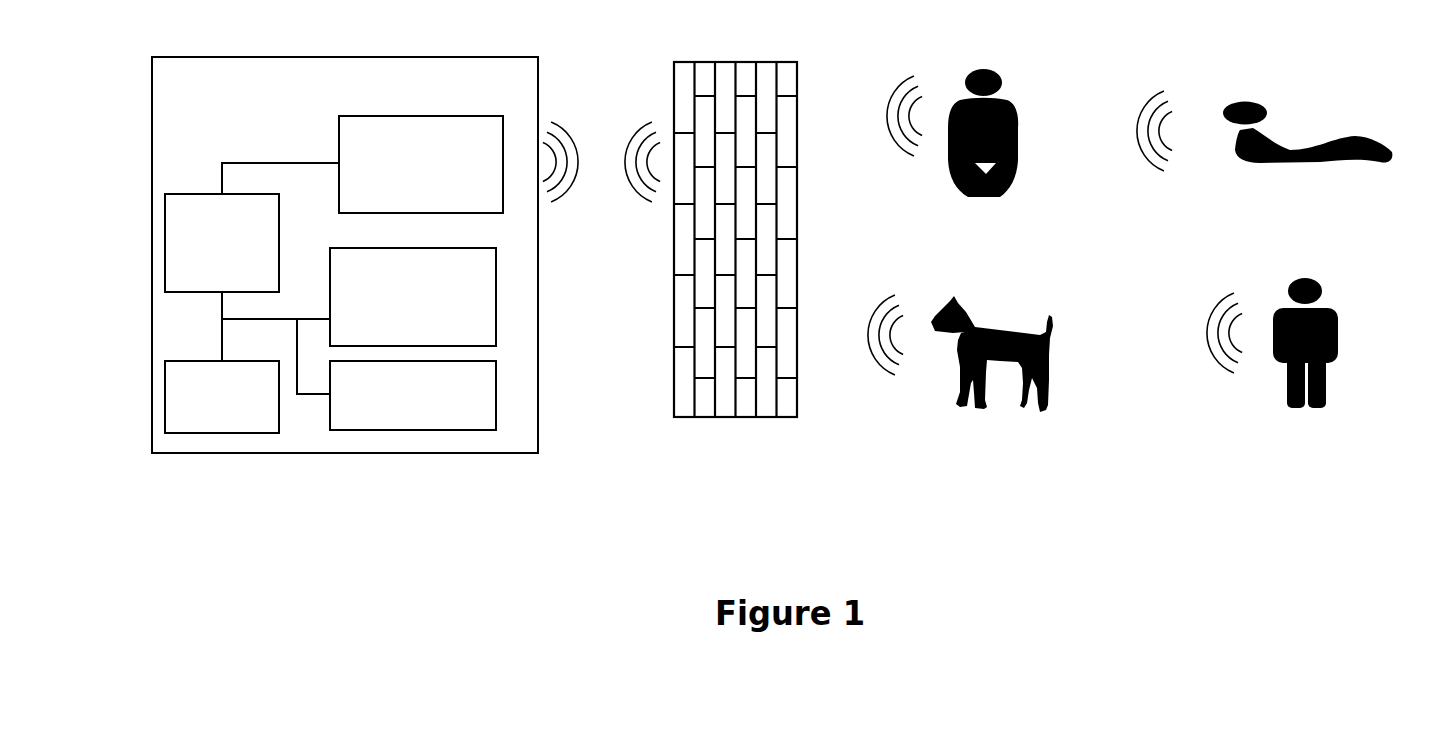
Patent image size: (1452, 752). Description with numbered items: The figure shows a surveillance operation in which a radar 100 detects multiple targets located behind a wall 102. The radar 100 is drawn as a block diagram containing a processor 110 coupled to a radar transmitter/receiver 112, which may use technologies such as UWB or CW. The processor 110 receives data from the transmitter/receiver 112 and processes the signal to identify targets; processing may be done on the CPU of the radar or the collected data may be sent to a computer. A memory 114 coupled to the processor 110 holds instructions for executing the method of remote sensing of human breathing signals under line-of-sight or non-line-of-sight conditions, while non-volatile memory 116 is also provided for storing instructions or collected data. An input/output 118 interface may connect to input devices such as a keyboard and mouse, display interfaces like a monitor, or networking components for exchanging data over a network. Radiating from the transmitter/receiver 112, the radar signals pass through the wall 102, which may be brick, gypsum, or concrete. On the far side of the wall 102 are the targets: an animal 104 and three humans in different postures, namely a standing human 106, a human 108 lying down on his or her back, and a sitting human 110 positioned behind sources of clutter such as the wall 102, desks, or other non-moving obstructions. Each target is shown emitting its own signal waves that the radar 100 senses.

The radar 100 is at (329, 56).
The wall 102 is at (677, 71).
The animal 104 is at (929, 297).
The human 106 is at (1298, 278).
The human 108 is at (1253, 101).
The processor 110 is at (203, 270).
The radar transmitter/receiver 112 is at (402, 189).
The memory 114 is at (394, 321).
The non-volatile memory 116 is at (394, 422).
The input/output interface 118 is at (203, 422).